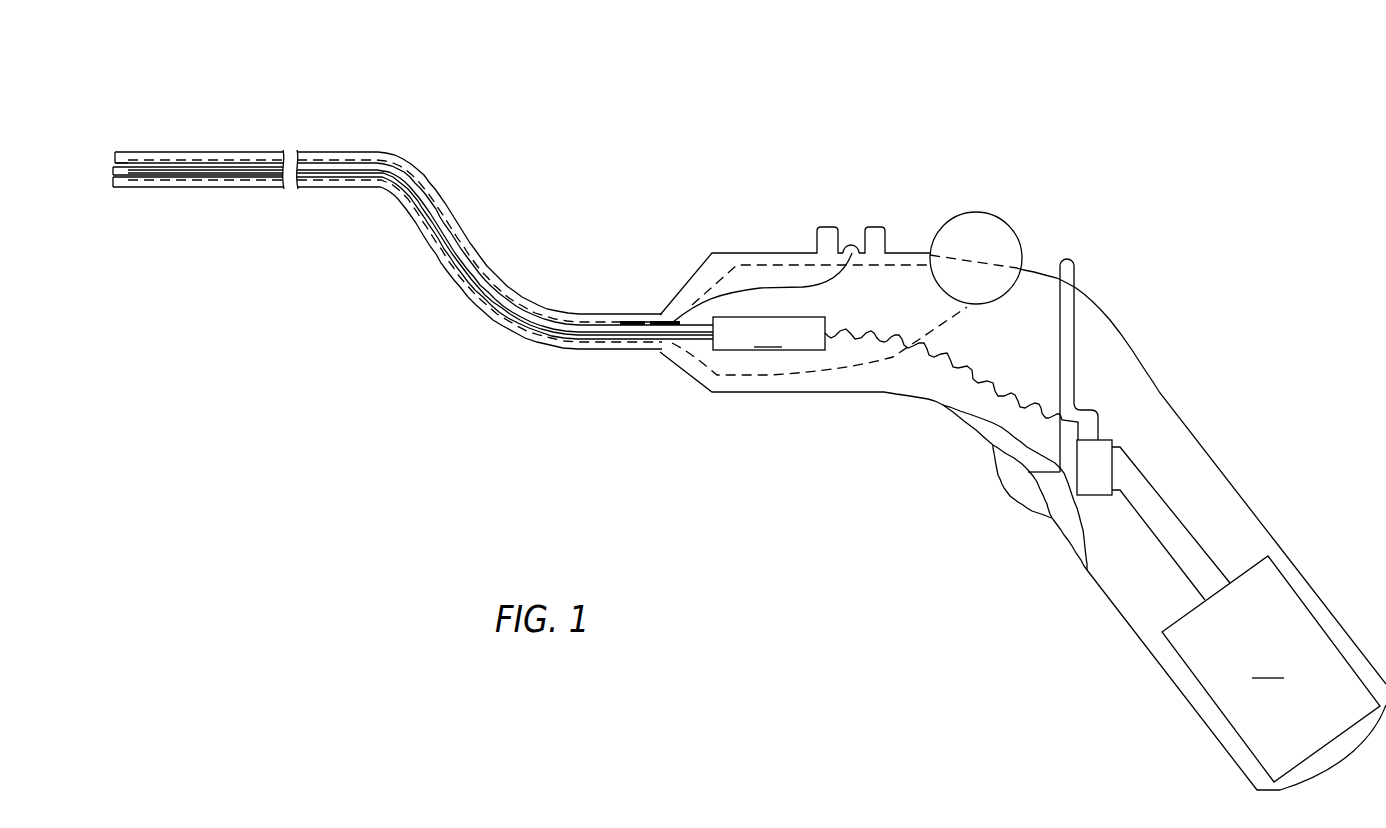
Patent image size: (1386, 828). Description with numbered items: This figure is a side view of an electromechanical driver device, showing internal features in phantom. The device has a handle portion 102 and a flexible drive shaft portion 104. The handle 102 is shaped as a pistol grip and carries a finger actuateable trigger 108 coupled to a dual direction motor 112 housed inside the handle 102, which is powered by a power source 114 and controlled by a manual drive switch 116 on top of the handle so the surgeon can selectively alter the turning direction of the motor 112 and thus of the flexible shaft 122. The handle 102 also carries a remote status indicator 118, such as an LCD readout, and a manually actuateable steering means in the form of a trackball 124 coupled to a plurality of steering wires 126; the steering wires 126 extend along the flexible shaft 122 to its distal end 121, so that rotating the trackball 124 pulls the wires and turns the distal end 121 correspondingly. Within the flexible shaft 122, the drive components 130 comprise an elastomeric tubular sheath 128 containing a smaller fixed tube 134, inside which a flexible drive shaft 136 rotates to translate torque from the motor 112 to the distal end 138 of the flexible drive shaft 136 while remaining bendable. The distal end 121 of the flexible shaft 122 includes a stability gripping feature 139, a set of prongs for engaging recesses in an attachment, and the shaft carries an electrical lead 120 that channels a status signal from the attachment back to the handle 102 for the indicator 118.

The handle portion 102 is at (1173, 345).
The flexible drive shaft portion 104 is at (531, 80).
The finger actuateable trigger 108 is at (1012, 480).
The motor 112 is at (769, 333).
The power source 114 is at (1271, 669).
The manual drive switch 116 is at (1069, 262).
The remote status indicator 118 is at (851, 247).
The electrical lead 120 is at (118, 212).
The distal end of the flexible shaft 121 is at (115, 152).
The flexible shaft 122 is at (512, 220).
The trackball 124 is at (1000, 228).
The steering wires 126 is at (898, 262).
The elastomeric tubular sheath 128 is at (385, 151).
The drive components 130 is at (652, 335).
The fixed tube 134 is at (198, 160).
The flexible drive shaft 136 is at (173, 163).
The distal end of the flexible drive shaft 138 is at (113, 171).
The stability gripping feature 139 is at (103, 185).